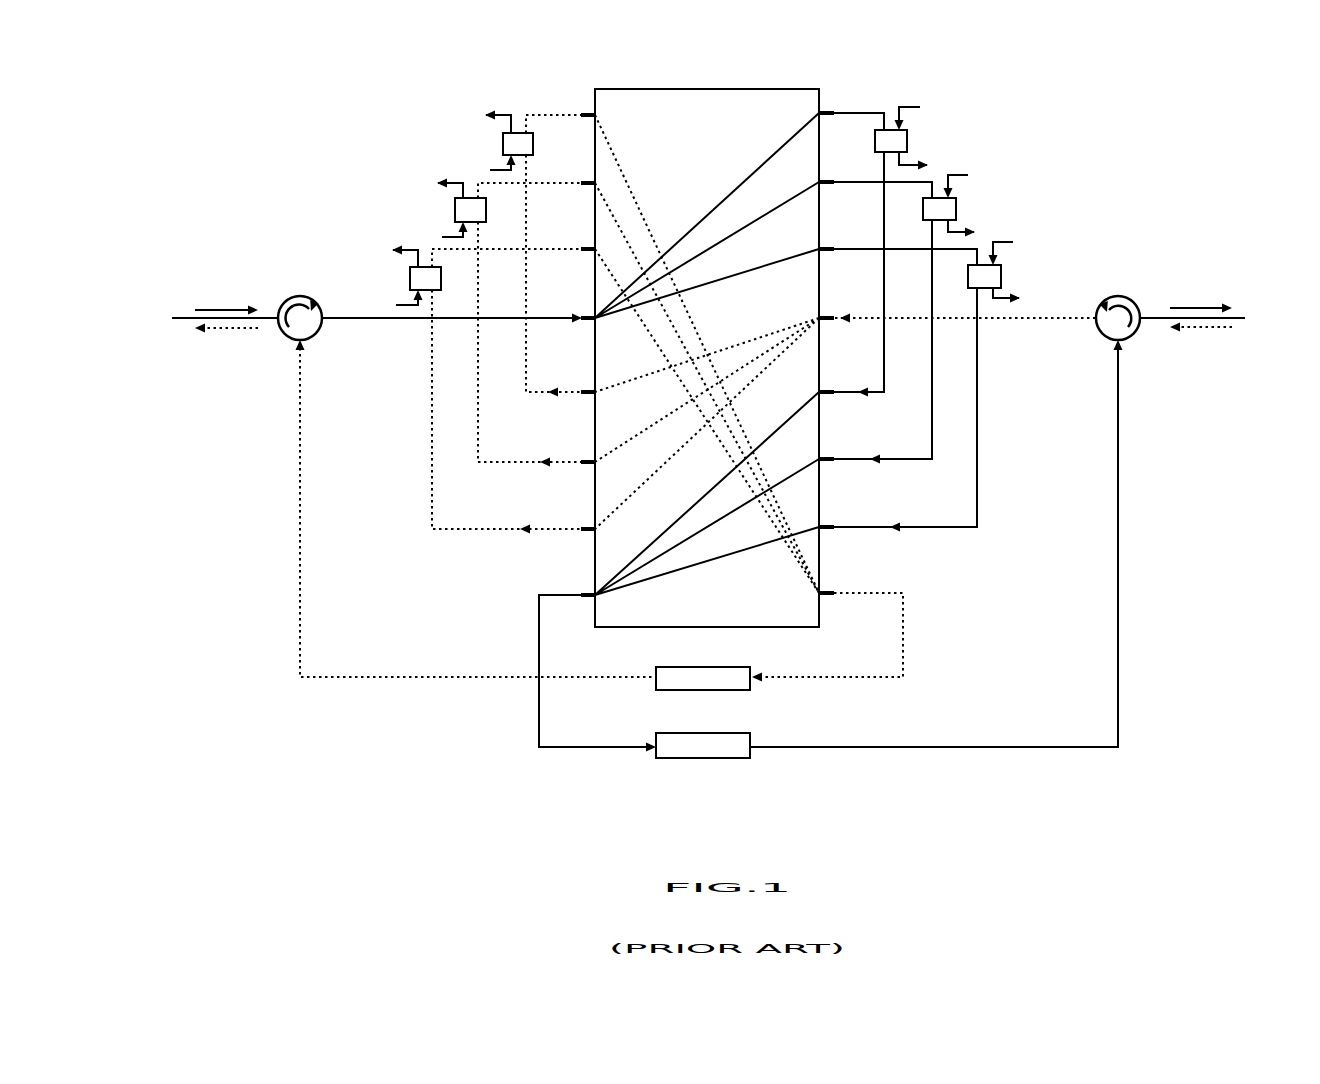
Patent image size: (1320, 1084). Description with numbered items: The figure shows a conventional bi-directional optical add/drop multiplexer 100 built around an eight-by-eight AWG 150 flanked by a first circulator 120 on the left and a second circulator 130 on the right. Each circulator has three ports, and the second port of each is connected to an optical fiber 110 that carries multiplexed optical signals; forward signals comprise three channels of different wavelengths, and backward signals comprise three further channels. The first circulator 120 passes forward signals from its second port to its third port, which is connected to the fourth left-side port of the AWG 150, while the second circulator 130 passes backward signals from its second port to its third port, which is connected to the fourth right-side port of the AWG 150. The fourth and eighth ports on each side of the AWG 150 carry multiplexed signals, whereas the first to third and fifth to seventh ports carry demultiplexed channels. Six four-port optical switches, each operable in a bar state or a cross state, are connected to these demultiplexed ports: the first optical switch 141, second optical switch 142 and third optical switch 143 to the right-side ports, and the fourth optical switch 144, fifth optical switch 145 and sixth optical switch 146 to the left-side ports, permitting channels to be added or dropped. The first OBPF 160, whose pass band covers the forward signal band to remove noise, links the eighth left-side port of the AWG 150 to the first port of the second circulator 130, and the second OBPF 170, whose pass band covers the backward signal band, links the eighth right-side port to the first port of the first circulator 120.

The optical add/drop multiplexer 100 is at (684, 787).
The optical fiber 110 is at (180, 318).
The first circulator 120 is at (284, 298).
The second circulator 130 is at (1128, 298).
The first optical switch 141 is at (875, 141).
The second optical switch 142 is at (923, 206).
The third optical switch 143 is at (968, 274).
The fourth optical switch 144 is at (533, 147).
The fifth optical switch 145 is at (486, 213).
The sixth optical switch 146 is at (441, 282).
The 8×8 AWG 150 is at (763, 89).
The first OBPF 160 is at (752, 732).
The second OBPF 170 is at (655, 690).